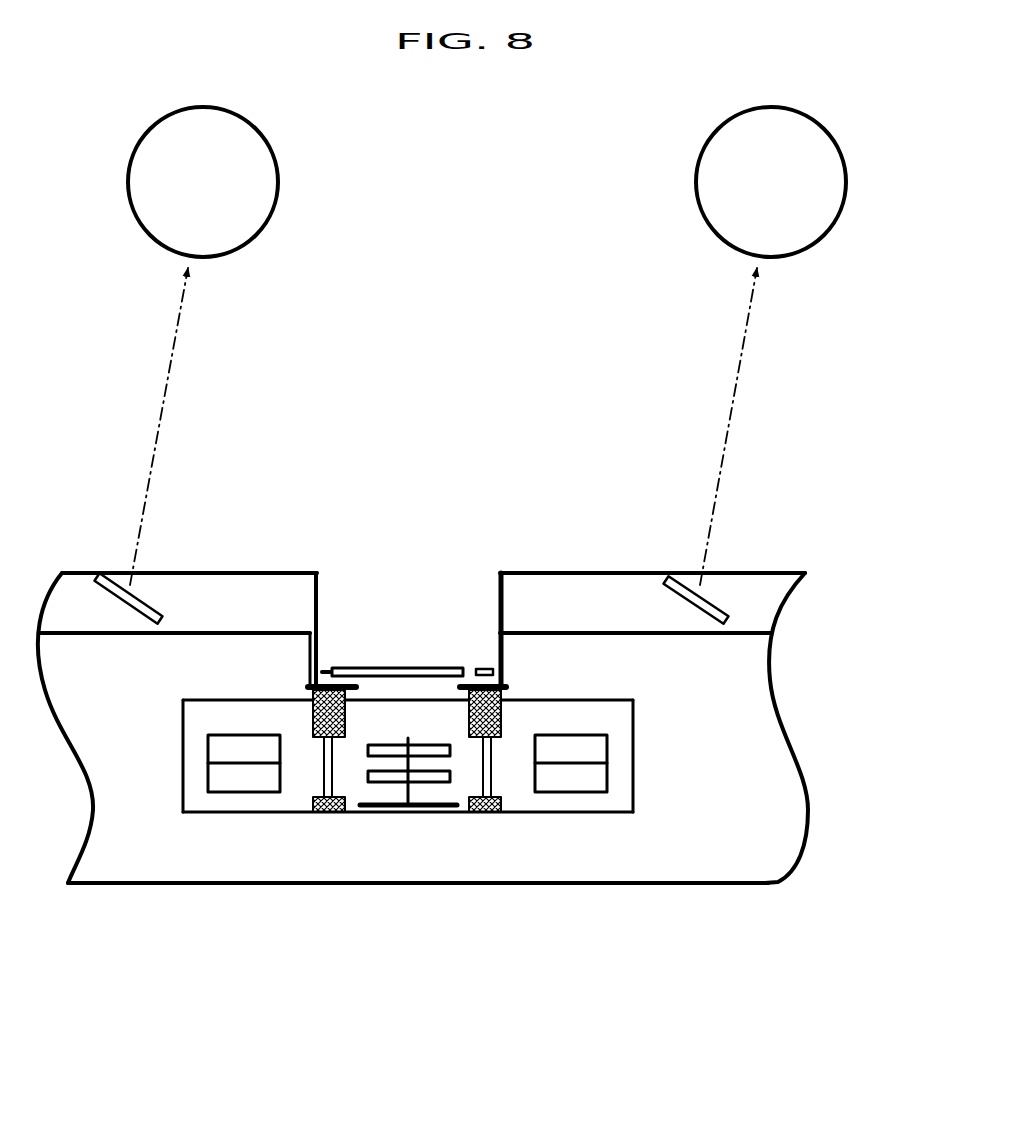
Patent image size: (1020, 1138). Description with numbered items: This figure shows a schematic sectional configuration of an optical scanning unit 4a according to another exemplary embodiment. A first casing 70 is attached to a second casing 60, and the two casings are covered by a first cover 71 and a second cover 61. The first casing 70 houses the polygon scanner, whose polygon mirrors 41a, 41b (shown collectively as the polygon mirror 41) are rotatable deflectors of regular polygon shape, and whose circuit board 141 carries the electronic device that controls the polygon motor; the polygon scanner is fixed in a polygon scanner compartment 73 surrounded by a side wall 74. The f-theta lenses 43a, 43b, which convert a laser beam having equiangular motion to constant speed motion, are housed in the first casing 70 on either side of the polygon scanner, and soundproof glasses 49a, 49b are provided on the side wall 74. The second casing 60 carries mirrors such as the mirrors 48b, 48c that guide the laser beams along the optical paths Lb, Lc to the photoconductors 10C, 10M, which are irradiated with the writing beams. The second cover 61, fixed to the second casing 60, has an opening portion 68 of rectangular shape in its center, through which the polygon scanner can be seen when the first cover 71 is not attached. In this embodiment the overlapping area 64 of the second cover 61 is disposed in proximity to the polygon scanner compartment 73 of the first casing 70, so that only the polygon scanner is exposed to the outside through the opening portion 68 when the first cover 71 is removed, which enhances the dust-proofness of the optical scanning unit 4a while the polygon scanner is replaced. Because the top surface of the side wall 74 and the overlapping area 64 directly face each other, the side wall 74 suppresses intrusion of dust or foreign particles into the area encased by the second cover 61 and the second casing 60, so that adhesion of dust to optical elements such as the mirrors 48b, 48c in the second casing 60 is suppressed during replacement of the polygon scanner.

The photoconductor 10C is at (300, 128).
The photoconductor 10M is at (868, 128).
The optical path Lb is at (170, 358).
The optical path Lc is at (740, 358).
The optical scanning unit 4a is at (833, 484).
The mirror 48b is at (150, 600).
The mirror 48c is at (718, 600).
The second casing 60 is at (750, 884).
The second cover 61 is at (316, 570).
The overlapping area 64 is at (325, 670).
The first cover 71 is at (340, 668).
The opening portion 68 is at (402, 686).
The side wall 74 is at (316, 712).
The polygon scanner compartment 73 is at (472, 755).
The first casing 70 is at (634, 800).
The f-theta lens 43a is at (207, 740).
The f-theta lens 43b is at (608, 740).
The soundproof glass 49a is at (322, 780).
The soundproof glass 49b is at (495, 780).
The polygon mirror 41 is at (386, 834).
The polygon mirror 41a is at (432, 782).
The polygon mirror 41b is at (368, 760).
The circuit board 141 is at (398, 808).